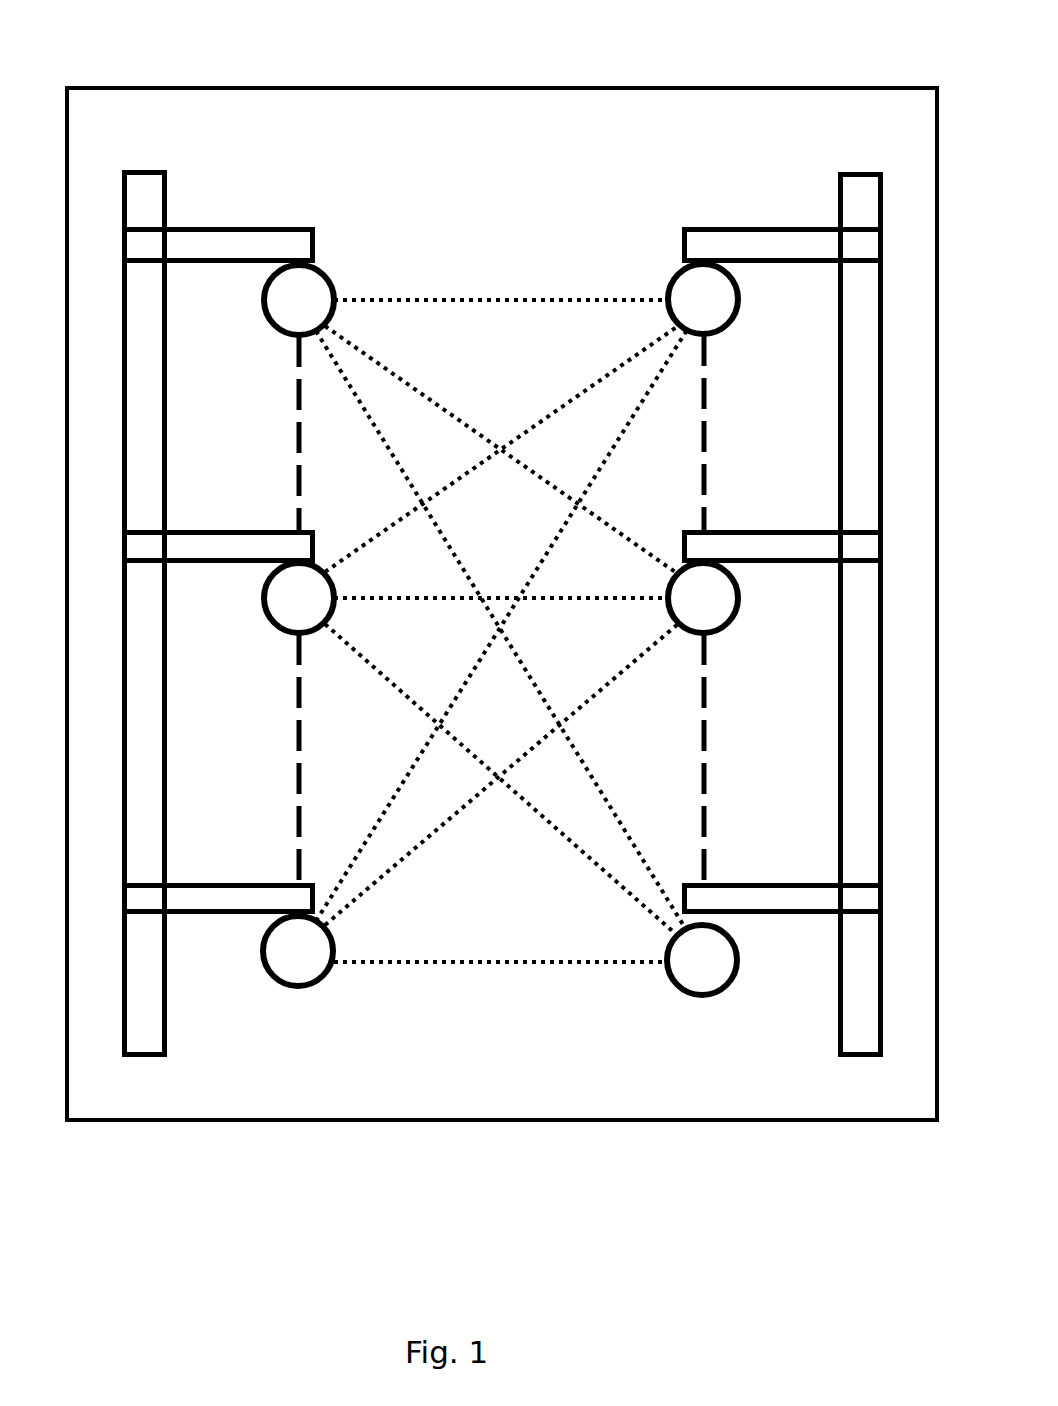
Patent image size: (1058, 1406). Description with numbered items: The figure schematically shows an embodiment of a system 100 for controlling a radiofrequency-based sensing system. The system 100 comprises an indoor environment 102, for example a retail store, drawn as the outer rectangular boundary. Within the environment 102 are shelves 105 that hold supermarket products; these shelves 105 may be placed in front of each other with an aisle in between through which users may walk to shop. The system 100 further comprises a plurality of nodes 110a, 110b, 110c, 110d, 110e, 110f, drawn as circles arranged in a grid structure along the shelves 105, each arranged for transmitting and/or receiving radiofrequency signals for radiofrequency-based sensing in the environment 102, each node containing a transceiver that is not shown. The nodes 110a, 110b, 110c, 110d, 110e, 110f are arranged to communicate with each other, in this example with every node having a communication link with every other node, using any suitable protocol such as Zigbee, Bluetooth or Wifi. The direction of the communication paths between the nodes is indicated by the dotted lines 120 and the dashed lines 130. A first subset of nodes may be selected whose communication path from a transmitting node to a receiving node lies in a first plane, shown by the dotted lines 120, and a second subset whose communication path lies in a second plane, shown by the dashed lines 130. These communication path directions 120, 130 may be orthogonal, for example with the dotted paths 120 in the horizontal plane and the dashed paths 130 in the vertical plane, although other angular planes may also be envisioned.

The system 100 is at (478, 1243).
The indoor environment 102 is at (539, 90).
The shelf 105 is at (228, 227).
The node 110a is at (270, 327).
The node 110b is at (272, 610).
The node 110c is at (273, 987).
The node 110d is at (720, 337).
The node 110e is at (720, 645).
The node 110f is at (723, 988).
The dotted lines 120 is at (530, 297).
The dashed lines 130 is at (292, 772).